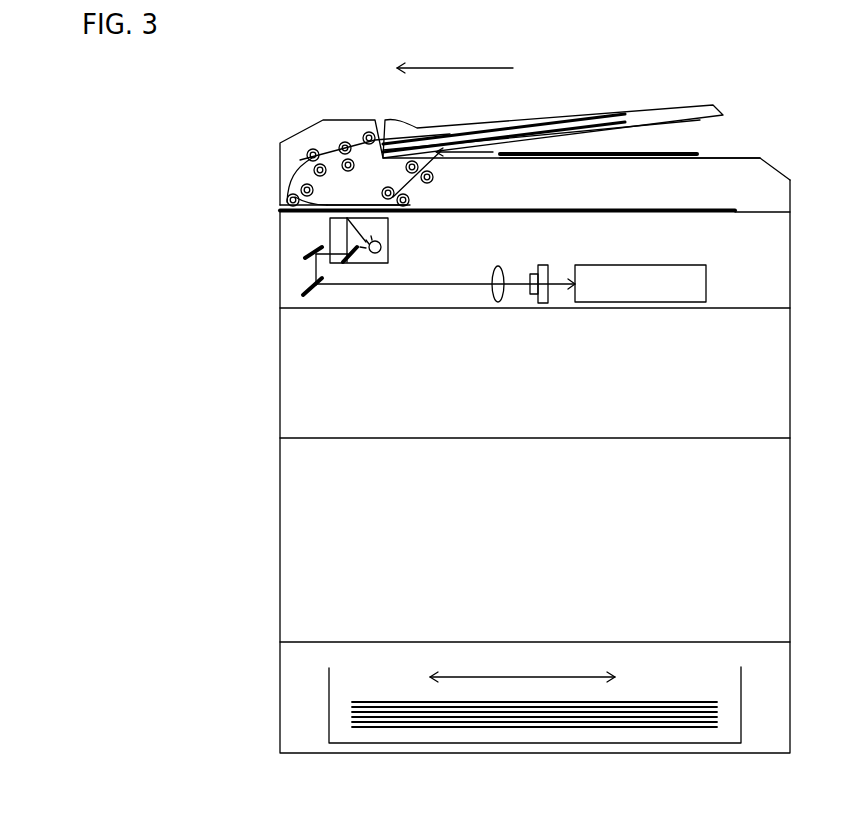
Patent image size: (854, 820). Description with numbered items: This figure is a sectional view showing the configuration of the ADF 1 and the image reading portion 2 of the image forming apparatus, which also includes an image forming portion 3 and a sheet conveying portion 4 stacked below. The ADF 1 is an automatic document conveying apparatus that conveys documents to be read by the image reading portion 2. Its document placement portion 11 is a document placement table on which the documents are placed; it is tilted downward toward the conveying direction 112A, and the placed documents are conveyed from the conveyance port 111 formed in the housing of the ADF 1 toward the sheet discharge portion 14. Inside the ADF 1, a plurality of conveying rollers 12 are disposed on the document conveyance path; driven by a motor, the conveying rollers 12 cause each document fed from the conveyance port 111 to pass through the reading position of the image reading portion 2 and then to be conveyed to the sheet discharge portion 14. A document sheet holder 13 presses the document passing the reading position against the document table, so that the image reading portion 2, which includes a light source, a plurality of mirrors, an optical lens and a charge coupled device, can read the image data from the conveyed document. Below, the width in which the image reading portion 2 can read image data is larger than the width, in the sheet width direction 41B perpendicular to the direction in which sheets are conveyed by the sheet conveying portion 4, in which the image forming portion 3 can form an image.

The ADF 1 is at (280, 163).
The document placement portion 11 is at (577, 112).
The conveyance port 111 is at (392, 137).
The conveying direction 112A is at (448, 66).
The conveying rollers 12 is at (312, 148).
The document sheet holder 13 is at (366, 202).
The sheet discharge portion 14 is at (748, 158).
The image reading portion 2 is at (280, 269).
The image forming portion 3 is at (280, 503).
The sheet conveying portion 4 is at (280, 698).
The sheet width direction 41B is at (526, 677).